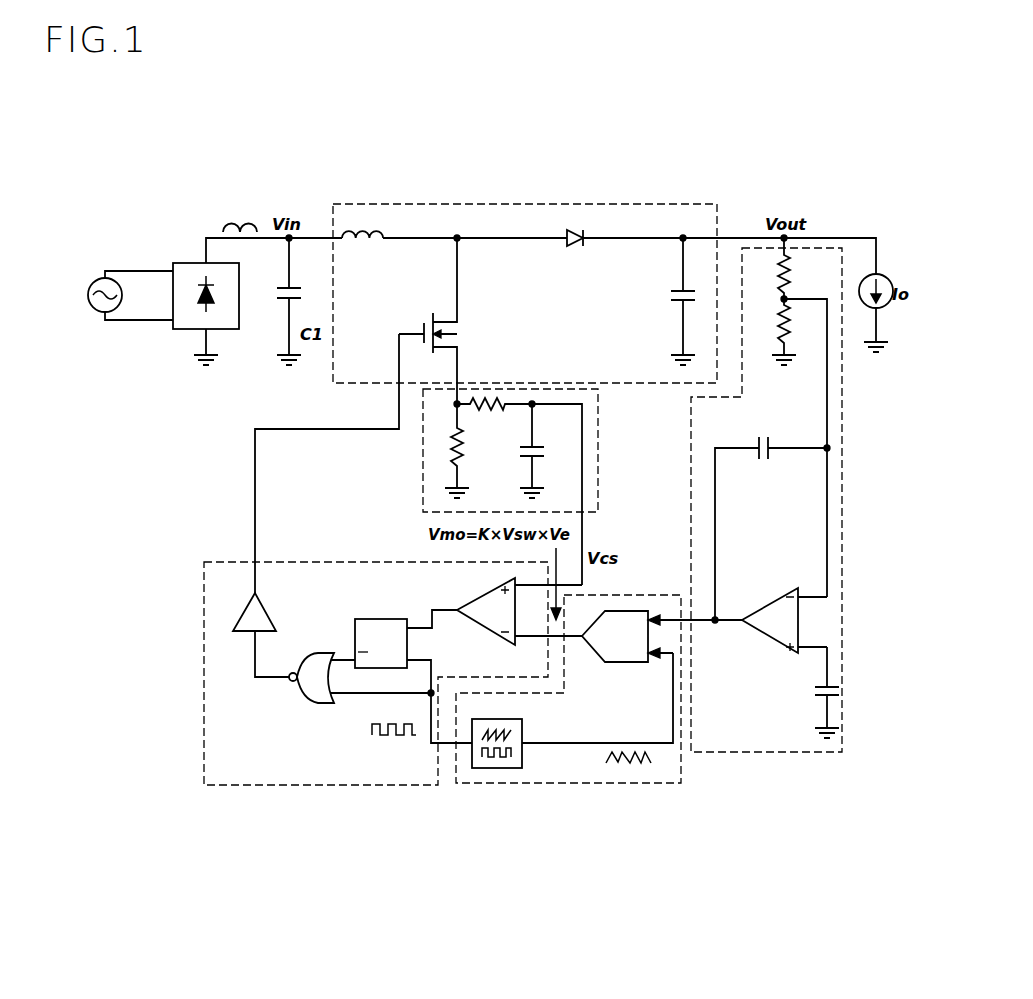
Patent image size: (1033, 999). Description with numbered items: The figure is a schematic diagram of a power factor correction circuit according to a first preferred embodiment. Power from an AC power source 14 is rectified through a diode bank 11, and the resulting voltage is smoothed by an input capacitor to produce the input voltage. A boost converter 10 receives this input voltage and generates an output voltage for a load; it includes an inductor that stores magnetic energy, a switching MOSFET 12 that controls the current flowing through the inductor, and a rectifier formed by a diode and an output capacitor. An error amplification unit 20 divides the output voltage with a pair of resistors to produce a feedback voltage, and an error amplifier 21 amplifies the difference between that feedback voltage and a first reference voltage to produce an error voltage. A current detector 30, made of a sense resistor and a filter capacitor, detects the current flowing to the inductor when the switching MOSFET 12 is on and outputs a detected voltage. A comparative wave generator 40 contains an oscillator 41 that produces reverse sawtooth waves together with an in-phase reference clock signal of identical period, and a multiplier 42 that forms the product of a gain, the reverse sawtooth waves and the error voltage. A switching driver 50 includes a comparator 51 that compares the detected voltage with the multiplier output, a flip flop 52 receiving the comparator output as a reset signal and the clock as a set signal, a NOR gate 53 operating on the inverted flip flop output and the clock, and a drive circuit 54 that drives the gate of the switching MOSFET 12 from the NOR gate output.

The boost converter 10 is at (553, 204).
The diode bank 11 is at (216, 298).
The switching MOSFET 12 is at (442, 333).
The AC power source 14 is at (100, 314).
The error amplification unit 20 is at (765, 753).
The error amplifier 21 is at (773, 638).
The current detector 30 is at (423, 478).
The comparative wave generator 40 is at (571, 785).
The oscillator 41 is at (522, 727).
The multiplier 42 is at (604, 658).
The switching driver 50 is at (318, 786).
The comparator 51 is at (481, 598).
The flip flop 52 is at (386, 619).
The NOR gate 53 is at (300, 700).
The drive circuit 54 is at (245, 612).